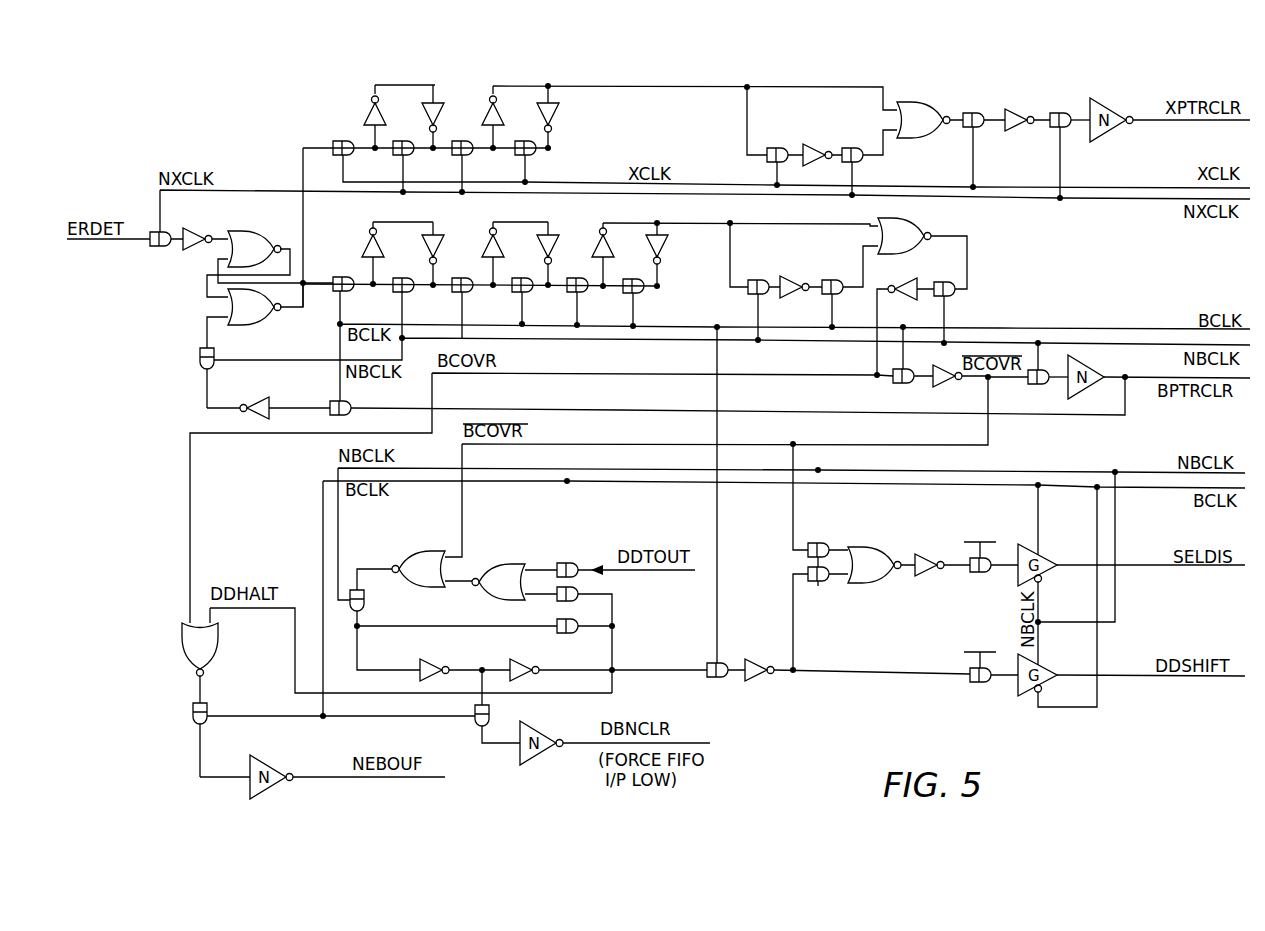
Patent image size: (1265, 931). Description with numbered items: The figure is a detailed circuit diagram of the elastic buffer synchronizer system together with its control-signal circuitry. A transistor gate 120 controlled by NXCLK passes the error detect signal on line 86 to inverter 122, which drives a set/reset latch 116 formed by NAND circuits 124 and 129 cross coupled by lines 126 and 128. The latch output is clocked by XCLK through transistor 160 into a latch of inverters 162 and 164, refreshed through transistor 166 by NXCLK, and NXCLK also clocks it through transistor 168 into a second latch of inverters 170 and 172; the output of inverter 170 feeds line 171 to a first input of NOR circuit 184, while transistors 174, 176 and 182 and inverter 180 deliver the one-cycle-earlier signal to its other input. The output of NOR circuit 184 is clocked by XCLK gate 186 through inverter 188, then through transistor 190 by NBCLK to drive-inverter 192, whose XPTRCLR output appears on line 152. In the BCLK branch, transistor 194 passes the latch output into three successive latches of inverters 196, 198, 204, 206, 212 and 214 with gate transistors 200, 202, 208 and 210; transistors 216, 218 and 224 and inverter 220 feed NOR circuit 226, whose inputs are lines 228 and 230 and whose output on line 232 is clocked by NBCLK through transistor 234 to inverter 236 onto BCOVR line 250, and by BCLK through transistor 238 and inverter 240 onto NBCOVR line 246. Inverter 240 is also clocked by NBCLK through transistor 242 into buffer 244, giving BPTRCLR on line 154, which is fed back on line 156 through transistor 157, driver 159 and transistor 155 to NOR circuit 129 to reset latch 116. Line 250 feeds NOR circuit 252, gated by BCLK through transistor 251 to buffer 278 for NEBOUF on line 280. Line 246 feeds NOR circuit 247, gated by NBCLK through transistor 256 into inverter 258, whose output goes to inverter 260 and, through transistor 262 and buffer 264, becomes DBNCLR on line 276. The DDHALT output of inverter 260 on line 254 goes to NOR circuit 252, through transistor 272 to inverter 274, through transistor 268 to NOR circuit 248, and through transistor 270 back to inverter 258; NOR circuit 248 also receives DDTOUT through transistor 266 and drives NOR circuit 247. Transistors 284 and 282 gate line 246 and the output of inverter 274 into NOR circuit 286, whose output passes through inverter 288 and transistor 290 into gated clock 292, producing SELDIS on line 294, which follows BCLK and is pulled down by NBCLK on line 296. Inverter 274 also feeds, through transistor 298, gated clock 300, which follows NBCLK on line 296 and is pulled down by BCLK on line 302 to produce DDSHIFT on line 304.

The error detect line 86 is at (117, 241).
The set/reset latch 116 is at (223, 274).
The transistor gate 120 is at (161, 247).
The inverter 122 is at (195, 228).
The NAND circuit 124 is at (252, 232).
The cross-coupling line 126 is at (206, 284).
The latch output line 128 is at (297, 312).
The NAND circuit 129 is at (258, 316).
The XPTRCLR line 152 is at (1188, 122).
The BPTRCLR line 154 is at (1136, 380).
The transistor 155 is at (200, 354).
The line 156 is at (615, 410).
The transistor 157 is at (333, 401).
The driver 159 is at (258, 400).
The transistor 160 is at (343, 141).
The inverter 162 is at (366, 112).
The inverter 164 is at (441, 106).
The transistor 166 is at (398, 157).
The transistor 168 is at (466, 157).
The inverter 170 is at (484, 114).
The line 171 is at (683, 86).
The inverter 172 is at (554, 114).
The transistor 174 is at (537, 157).
The transistor 176 is at (768, 160).
The inverter 180 is at (816, 143).
The transistor 182 is at (862, 128).
The NOR circuit 184 is at (924, 95).
The XCLK gate transistor 186 is at (970, 113).
The inverter 188 is at (1022, 109).
The transistor 190 is at (1058, 128).
The drive-inverter 192 is at (1115, 108).
The transistor 194 is at (350, 277).
The inverter 196 is at (365, 246).
The inverter 198 is at (460, 218).
The gate transistor 200 is at (400, 292).
The gate transistor 202 is at (458, 292).
The inverter 204 is at (483, 246).
The inverter 206 is at (552, 240).
The gate transistor 208 is at (520, 292).
The gate transistor 210 is at (575, 292).
The inverter 212 is at (594, 246).
The inverter 214 is at (667, 243).
The transistor 216 is at (625, 293).
The transistor 218 is at (751, 296).
The inverter 220 is at (790, 278).
The transistor 224 is at (836, 263).
The NOR circuit 226 is at (913, 226).
The line 228 is at (815, 222).
The line 230 is at (862, 250).
The line 232 is at (969, 258).
The transistor 234 is at (948, 297).
The inverter 236 is at (914, 283).
The transistor 238 is at (900, 384).
The inverter 240 is at (962, 393).
The transistor 242 is at (1043, 385).
The buffer/driver 244 is at (1090, 366).
The NBCOVR line 246 is at (900, 445).
The NOR circuit 247 is at (414, 551).
The NOR circuit 248 is at (503, 565).
The BCOVR line 250 is at (577, 373).
The transistor 251 is at (193, 712).
The NOR circuit 252 is at (183, 643).
The DDHALT line 254 is at (294, 660).
The transistor 256 is at (365, 603).
The inverter 258 is at (424, 658).
The inverter 260 is at (525, 659).
The transistor 262 is at (476, 720).
The inverter/driver buffer 264 is at (546, 756).
The transistor 266 is at (577, 562).
The transistor 268 is at (582, 592).
The transistor 270 is at (562, 634).
The transistor 272 is at (708, 664).
The inverter 274 is at (757, 662).
The DBNCLR line 276 is at (582, 742).
The inverter/driver buffer 278 is at (268, 767).
The NEBOUF line 280 is at (353, 778).
The transistor 282 is at (822, 588).
The transistor 284 is at (824, 544).
The NOR circuit 286 is at (864, 582).
The inverter 288 is at (925, 530).
The transistor 290 is at (985, 572).
The gated clock 292 is at (1030, 543).
The SELDIS line 294 is at (1148, 563).
The NBCLK line 296 is at (1041, 597).
The transistor 298 is at (985, 683).
The gated clock 300 is at (1028, 698).
The BCLK line 302 is at (1098, 700).
The DDSHIFT line 304 is at (1135, 668).